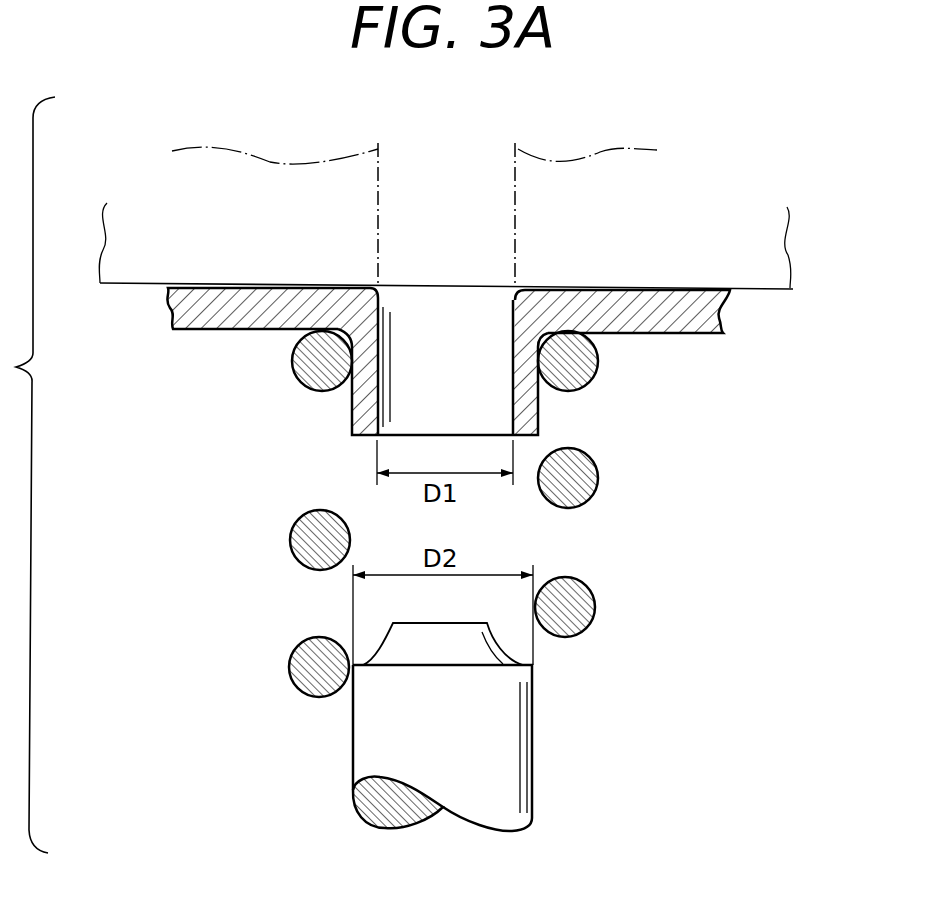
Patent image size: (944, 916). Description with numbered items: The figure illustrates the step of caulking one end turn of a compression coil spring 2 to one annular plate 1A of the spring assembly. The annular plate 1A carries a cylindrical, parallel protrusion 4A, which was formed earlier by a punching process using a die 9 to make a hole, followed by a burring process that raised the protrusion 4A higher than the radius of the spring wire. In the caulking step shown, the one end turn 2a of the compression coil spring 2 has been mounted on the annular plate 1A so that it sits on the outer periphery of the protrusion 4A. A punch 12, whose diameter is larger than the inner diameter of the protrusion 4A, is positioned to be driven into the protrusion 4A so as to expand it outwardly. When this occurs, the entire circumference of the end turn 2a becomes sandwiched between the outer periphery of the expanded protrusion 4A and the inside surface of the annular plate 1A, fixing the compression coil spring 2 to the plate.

The die 9 is at (586, 174).
The annular plate 1A is at (208, 330).
The protrusion 4A is at (352, 407).
The end turn 2a is at (592, 375).
The compression coil spring 2 is at (290, 665).
The punch 12 is at (515, 760).